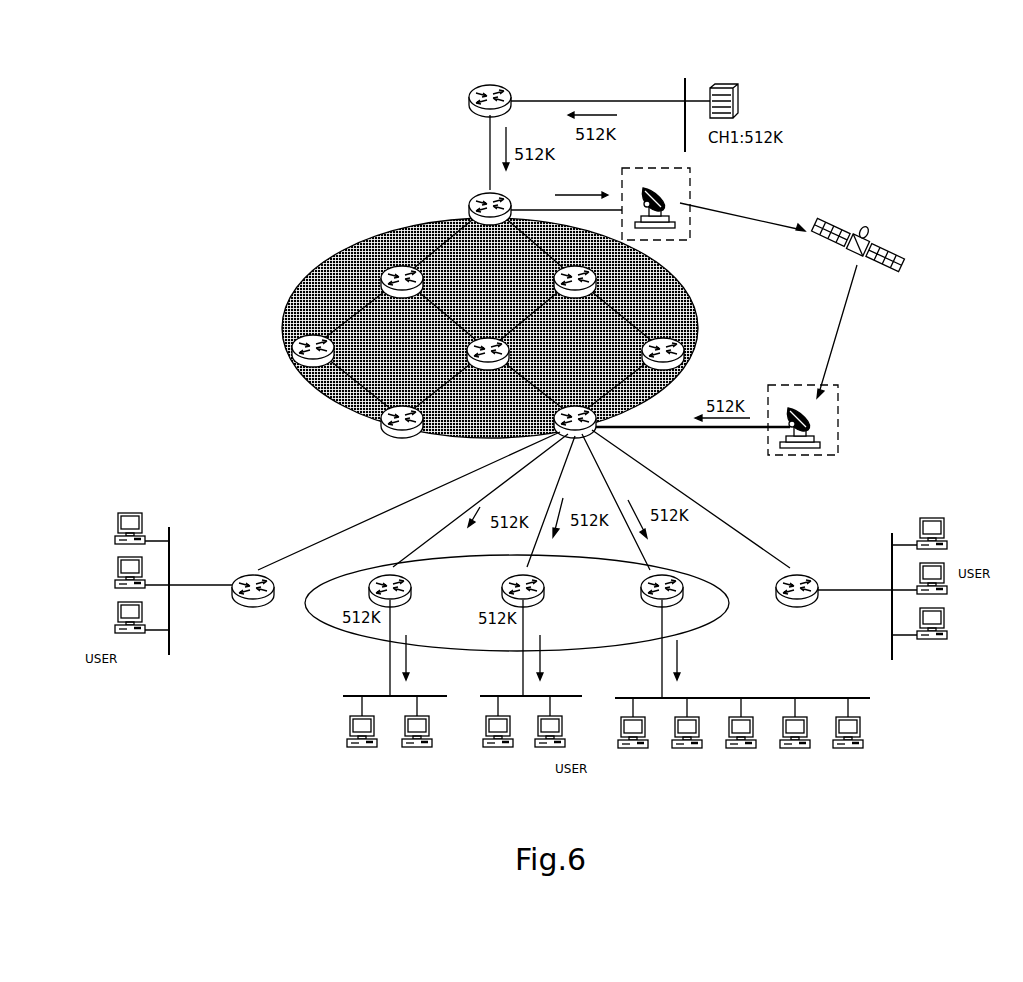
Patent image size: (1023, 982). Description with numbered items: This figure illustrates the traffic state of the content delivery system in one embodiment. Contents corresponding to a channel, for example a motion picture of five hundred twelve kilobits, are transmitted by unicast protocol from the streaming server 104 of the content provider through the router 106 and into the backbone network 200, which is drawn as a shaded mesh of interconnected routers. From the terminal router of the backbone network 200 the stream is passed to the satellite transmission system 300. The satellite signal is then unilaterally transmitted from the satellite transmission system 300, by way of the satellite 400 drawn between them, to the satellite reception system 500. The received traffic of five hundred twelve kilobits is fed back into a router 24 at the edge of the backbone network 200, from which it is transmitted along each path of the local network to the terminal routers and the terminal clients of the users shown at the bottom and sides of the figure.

The router 106 is at (492, 85).
The streaming server 104 is at (722, 88).
The backbone network 200 is at (310, 272).
The satellite transmission system 300 is at (692, 178).
The satellite 400 is at (862, 232).
The satellite reception system 500 is at (840, 390).
The router 24 is at (602, 432).